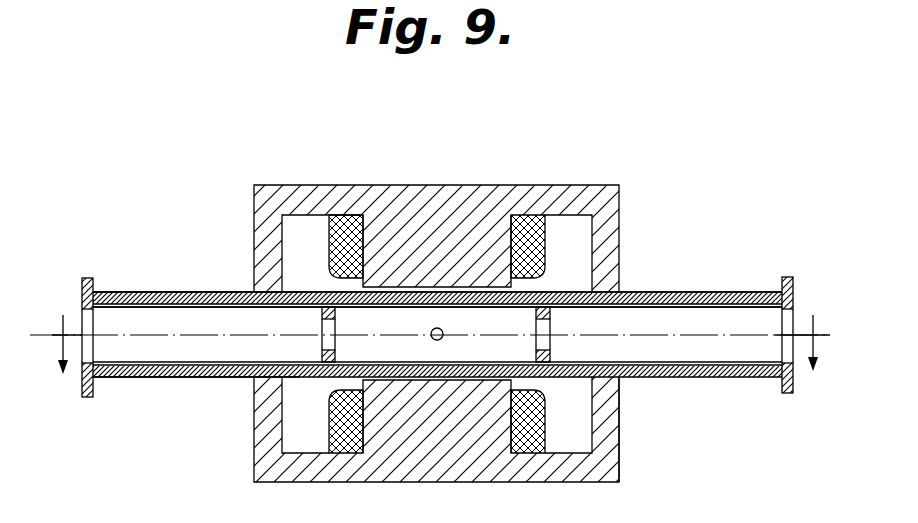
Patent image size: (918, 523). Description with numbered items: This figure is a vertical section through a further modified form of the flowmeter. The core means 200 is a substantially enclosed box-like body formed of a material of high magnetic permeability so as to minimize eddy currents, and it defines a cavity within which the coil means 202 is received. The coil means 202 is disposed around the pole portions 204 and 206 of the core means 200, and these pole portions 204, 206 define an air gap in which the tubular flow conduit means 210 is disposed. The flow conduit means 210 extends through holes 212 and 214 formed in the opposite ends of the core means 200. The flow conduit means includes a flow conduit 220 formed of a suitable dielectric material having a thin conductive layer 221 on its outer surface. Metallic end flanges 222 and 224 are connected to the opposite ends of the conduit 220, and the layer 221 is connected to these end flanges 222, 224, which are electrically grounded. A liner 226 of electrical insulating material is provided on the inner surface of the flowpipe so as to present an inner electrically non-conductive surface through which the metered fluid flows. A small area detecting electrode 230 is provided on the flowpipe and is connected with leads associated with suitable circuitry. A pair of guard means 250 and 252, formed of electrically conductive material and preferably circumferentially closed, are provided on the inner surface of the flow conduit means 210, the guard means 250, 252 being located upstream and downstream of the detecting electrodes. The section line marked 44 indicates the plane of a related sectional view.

The core means 200 is at (558, 186).
The coil means 202 is at (330, 244).
The pole portion 204 is at (441, 243).
The pole portion 206 is at (455, 415).
The tubular flow conduit means 210 is at (653, 385).
The hole 212 is at (258, 350).
The hole 214 is at (608, 312).
The flow conduit 220 is at (718, 297).
The thin conductive layer 221 is at (700, 293).
The metallic end flange 222 is at (92, 398).
The metallic end flange 224 is at (796, 282).
The liner 226 is at (170, 322).
The detecting electrode 230 is at (443, 330).
The guard means 250 is at (322, 318).
The guard means 252 is at (552, 352).
The section line 44- 44 is at (438, 344).